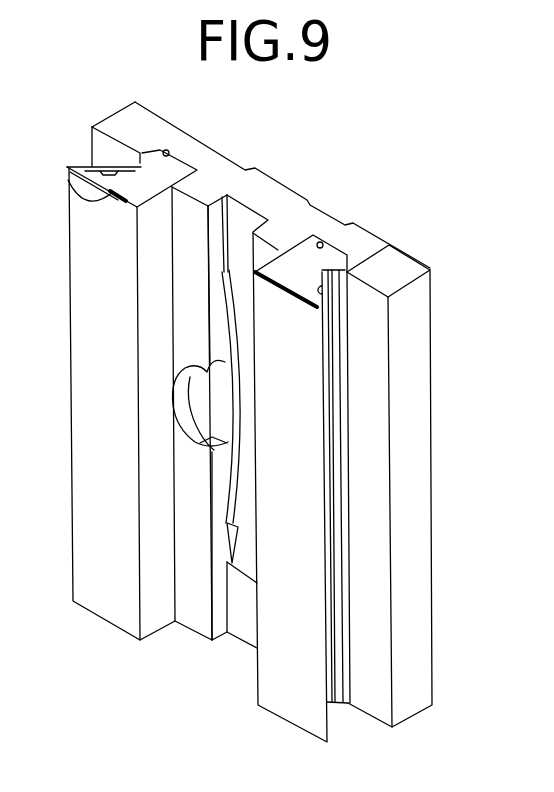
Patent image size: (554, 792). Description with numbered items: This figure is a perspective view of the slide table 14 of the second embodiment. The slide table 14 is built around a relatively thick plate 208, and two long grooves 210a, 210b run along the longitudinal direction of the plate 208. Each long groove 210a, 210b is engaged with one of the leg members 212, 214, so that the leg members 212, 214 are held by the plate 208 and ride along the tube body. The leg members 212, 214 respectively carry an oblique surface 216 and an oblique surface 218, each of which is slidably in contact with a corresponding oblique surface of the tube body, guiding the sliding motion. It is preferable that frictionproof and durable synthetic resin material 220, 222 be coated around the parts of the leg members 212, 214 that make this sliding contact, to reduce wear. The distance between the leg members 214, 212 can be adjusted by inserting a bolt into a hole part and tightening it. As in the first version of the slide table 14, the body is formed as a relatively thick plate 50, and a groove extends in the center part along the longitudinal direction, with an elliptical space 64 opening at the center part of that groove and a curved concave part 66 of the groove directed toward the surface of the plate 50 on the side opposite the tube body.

The slide table 14 is at (319, 186).
The plate 50 is at (247, 622).
The elliptical space 64 is at (188, 418).
The curved concave part 66 is at (250, 453).
The plate 208 is at (270, 197).
The long groove 210a is at (318, 258).
The long groove 210b is at (167, 157).
The leg member 212 is at (325, 250).
The leg member 214 is at (172, 168).
The oblique surface 216 is at (320, 308).
The oblique surface 218 is at (92, 162).
The synthetic resin material 220 is at (295, 293).
The synthetic resin material 222 is at (70, 185).